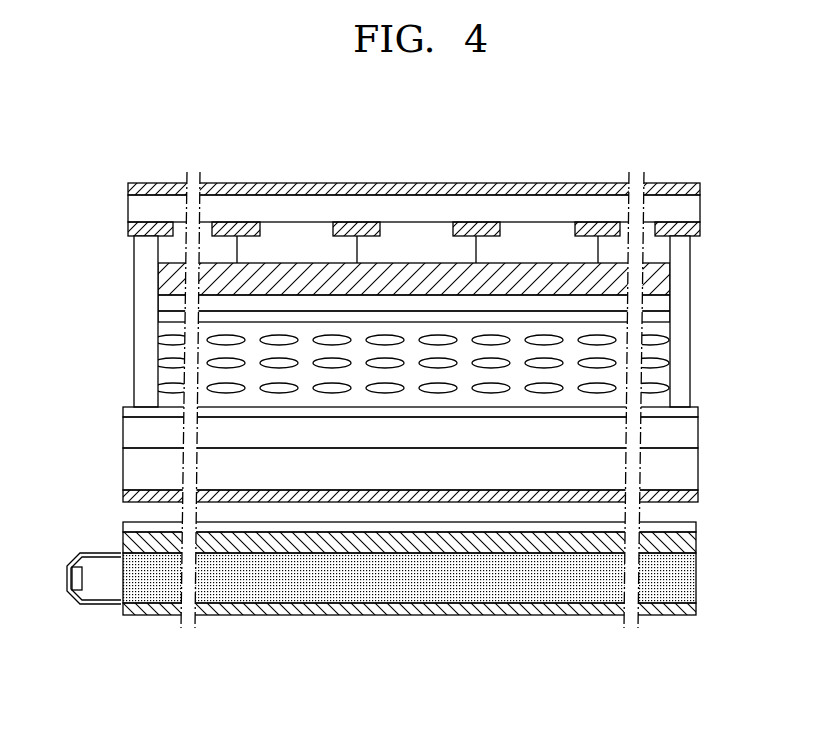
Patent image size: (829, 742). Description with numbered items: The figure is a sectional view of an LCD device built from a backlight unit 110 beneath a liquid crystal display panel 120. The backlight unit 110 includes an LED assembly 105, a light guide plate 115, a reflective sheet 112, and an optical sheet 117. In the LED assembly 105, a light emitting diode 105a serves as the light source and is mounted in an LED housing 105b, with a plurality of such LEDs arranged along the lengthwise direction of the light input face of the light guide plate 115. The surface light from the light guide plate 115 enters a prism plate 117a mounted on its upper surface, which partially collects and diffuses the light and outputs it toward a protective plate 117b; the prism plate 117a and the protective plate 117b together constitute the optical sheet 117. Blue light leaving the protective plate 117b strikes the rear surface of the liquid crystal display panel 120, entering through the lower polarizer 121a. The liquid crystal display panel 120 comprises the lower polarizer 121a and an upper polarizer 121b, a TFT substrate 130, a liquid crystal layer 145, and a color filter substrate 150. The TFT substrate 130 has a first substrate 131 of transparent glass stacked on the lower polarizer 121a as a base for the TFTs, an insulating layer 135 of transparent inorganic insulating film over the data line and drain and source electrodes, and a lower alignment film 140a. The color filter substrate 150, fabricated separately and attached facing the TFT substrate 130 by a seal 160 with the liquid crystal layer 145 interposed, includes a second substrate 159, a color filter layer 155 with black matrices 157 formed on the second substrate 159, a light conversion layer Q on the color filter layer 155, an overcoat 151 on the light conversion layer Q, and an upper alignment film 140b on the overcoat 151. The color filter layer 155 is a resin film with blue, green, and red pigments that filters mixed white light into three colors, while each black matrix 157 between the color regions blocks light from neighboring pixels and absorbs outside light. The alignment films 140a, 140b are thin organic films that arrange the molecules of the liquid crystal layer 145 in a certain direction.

The upper polarizer 121b is at (700, 189).
The second substrate 159 is at (700, 208).
The black matrix 157 is at (700, 229).
The color filter layer 155 is at (663, 251).
The light conversion layer Q is at (663, 281).
The overcoat 151 is at (663, 303).
The upper alignment film 140b is at (663, 318).
The color filter substrate 150 is at (762, 200).
The liquid crystal layer 145 is at (660, 352).
The seal 160 is at (680, 380).
The lower alignment film 140a is at (698, 410).
The insulating layer 135 is at (698, 434).
The first substrate 131 is at (698, 466).
The TFT substrate 130 is at (762, 403).
The lower polarizer 121a is at (698, 494).
The liquid crystal display panel 120 is at (63, 498).
The backlight unit 110 is at (58, 522).
The LED assembly 105 is at (140, 668).
The light emitting diode 105a is at (82, 583).
The LED housing 105b is at (102, 603).
The reflective sheet 112 is at (250, 616).
The light guide plate 115 is at (310, 592).
The optical sheet 117 is at (433, 677).
The prism plate 117a is at (373, 552).
The protective plate 117b is at (418, 530).